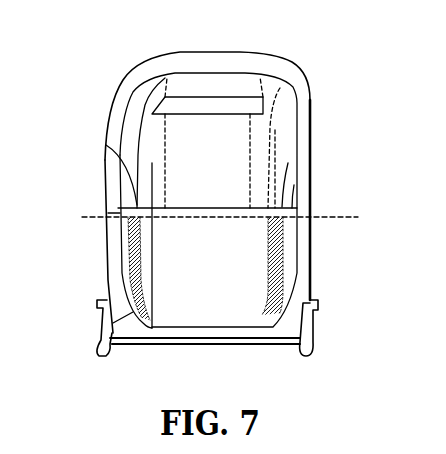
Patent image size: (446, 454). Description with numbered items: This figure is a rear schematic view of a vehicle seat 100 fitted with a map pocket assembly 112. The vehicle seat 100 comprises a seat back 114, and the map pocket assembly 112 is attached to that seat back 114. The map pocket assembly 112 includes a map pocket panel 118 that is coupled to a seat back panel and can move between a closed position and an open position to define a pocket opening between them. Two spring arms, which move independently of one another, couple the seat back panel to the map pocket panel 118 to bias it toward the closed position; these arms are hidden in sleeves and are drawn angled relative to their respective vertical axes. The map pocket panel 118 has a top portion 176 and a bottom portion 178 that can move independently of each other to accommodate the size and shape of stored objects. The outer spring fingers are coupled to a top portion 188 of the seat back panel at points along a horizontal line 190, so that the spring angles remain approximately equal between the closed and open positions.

The vehicle seat 100 is at (135, 35).
The map pocket assembly 112 is at (327, 281).
The seat back 114 is at (292, 75).
The map pocket panel 118 is at (288, 163).
The top portion 176 is at (108, 213).
The bottom portion 178 is at (112, 332).
The top portion 188 is at (120, 223).
The horizontal line 190 is at (358, 217).